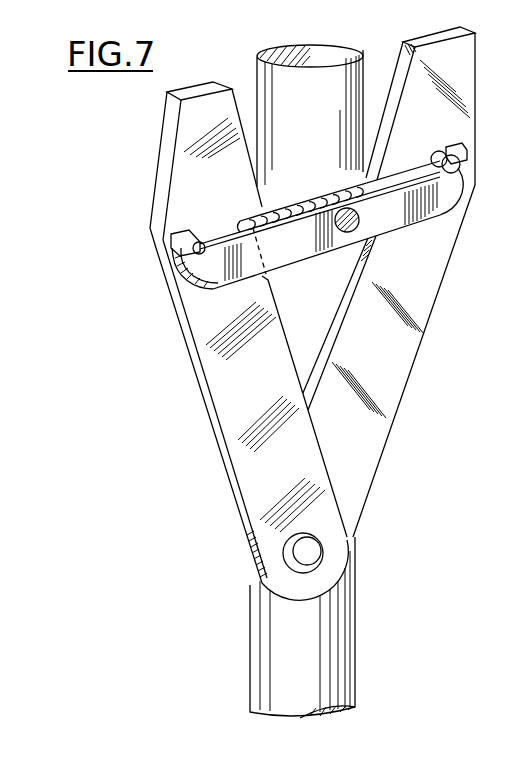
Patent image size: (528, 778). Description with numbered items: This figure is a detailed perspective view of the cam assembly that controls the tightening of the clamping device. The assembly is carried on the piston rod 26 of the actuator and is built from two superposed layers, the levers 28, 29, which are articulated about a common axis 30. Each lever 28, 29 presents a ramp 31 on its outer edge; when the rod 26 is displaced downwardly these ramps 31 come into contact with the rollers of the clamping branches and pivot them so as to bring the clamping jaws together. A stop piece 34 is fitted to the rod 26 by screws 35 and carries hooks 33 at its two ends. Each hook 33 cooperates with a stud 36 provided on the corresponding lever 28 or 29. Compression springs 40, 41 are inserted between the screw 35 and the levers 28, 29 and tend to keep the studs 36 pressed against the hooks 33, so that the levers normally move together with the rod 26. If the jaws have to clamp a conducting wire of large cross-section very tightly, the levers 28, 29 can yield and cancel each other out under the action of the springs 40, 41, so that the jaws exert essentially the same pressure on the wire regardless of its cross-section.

The piston rod 26 is at (338, 622).
The lever 28 is at (422, 338).
The lever 29 is at (230, 437).
The axis 30 is at (312, 553).
The ramp 31 is at (167, 177).
The hook 33 is at (197, 254).
The stop piece 34 is at (307, 247).
The screw 35 is at (358, 229).
The stud 36 is at (199, 242).
The compression spring 40 is at (293, 197).
The compression spring 41 is at (352, 168).